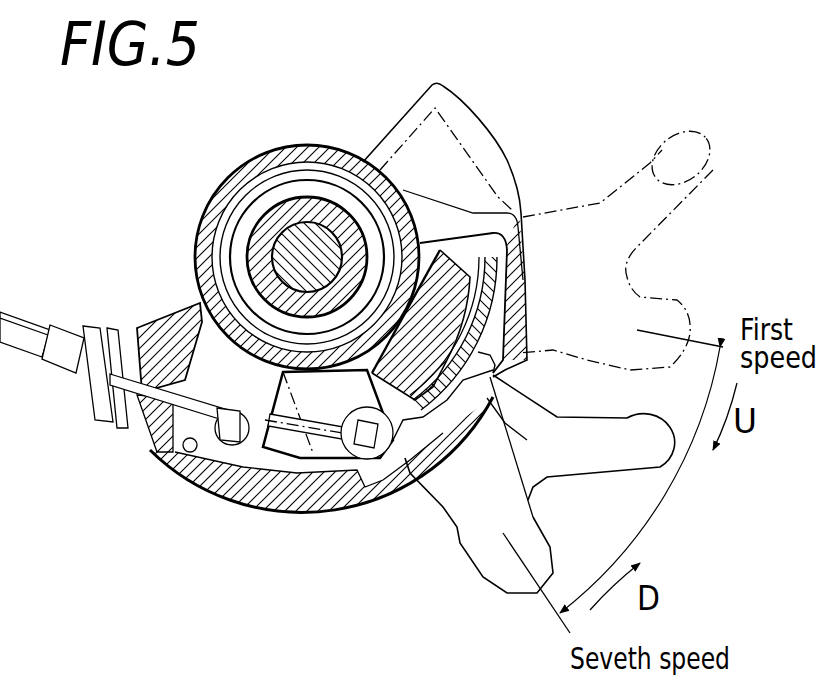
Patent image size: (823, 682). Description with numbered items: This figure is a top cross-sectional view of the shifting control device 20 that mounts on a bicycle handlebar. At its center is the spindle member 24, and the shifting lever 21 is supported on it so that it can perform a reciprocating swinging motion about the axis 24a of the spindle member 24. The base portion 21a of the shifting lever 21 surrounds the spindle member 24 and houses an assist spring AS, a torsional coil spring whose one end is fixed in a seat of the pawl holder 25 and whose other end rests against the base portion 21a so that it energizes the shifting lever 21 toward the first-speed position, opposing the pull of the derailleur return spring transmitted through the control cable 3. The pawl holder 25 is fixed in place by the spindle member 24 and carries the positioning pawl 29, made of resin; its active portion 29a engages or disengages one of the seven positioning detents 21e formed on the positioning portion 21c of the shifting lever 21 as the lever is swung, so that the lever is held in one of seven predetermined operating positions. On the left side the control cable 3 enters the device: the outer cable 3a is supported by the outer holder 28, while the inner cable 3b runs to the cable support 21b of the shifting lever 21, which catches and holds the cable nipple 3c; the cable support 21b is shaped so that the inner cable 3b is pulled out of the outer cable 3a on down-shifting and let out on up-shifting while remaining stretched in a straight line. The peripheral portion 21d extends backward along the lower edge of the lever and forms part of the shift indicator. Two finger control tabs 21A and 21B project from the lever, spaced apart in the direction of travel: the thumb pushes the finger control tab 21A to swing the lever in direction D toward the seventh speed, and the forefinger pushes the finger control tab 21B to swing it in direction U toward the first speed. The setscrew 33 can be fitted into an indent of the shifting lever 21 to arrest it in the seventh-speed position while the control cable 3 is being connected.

The shifting control device 20 is at (178, 198).
The shifting lever 21 is at (381, 485).
The base portion 21a is at (240, 168).
The cable support 21b is at (217, 453).
The positioning portion 21c is at (523, 434).
The peripheral portion 21d is at (310, 513).
The positioning detents 21e is at (452, 425).
The finger control tab 21A is at (487, 580).
The finger control tab 21B is at (670, 443).
The spindle member 24 is at (285, 263).
The axis 24a is at (303, 253).
The pawl holder 25 is at (455, 270).
The outer holder 28 is at (83, 385).
The positioning pawl 29 is at (507, 293).
The active portion 29a is at (481, 357).
The control cable 3 is at (411, 341).
The outer cable 3a is at (27, 345).
The inner cable 3b is at (137, 403).
The cable nipple 3c is at (233, 458).
The setscrew 33 is at (183, 462).
The assist spring AS is at (232, 290).